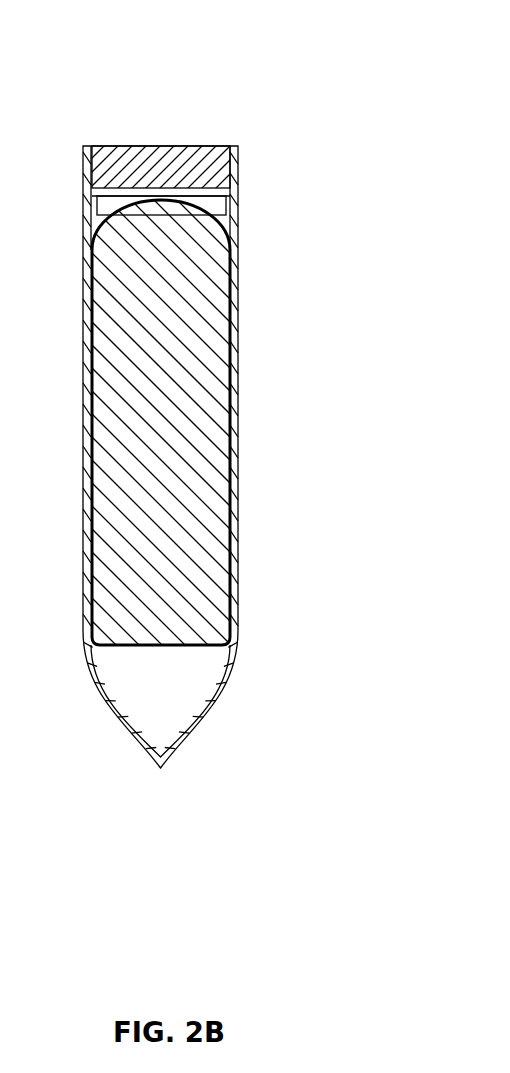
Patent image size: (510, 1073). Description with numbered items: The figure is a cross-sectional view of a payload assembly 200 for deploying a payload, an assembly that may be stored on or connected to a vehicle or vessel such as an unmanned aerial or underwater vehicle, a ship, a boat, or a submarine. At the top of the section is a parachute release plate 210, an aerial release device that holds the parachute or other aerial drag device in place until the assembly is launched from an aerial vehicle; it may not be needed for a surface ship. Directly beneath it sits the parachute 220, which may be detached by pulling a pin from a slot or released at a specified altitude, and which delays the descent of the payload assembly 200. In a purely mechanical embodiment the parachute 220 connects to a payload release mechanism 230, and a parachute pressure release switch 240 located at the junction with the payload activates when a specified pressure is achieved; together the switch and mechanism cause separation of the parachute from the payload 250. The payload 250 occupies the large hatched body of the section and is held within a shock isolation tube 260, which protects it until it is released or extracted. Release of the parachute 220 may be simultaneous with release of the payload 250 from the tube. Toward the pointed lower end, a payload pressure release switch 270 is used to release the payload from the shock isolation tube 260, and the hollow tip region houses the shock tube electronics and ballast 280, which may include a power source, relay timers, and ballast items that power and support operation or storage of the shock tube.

The payload assembly 200 is at (140, 43).
The parachute release plate 210 is at (218, 143).
The parachute 220 is at (218, 161).
The payload release mechanism 230 is at (230, 212).
The parachute pressure release switch 240 is at (237, 246).
The payload 250 is at (212, 360).
The shock isolation tube 260 is at (241, 532).
The payload pressure release switch 270 is at (214, 716).
The shock tube electronics and ballast 280 is at (162, 722).